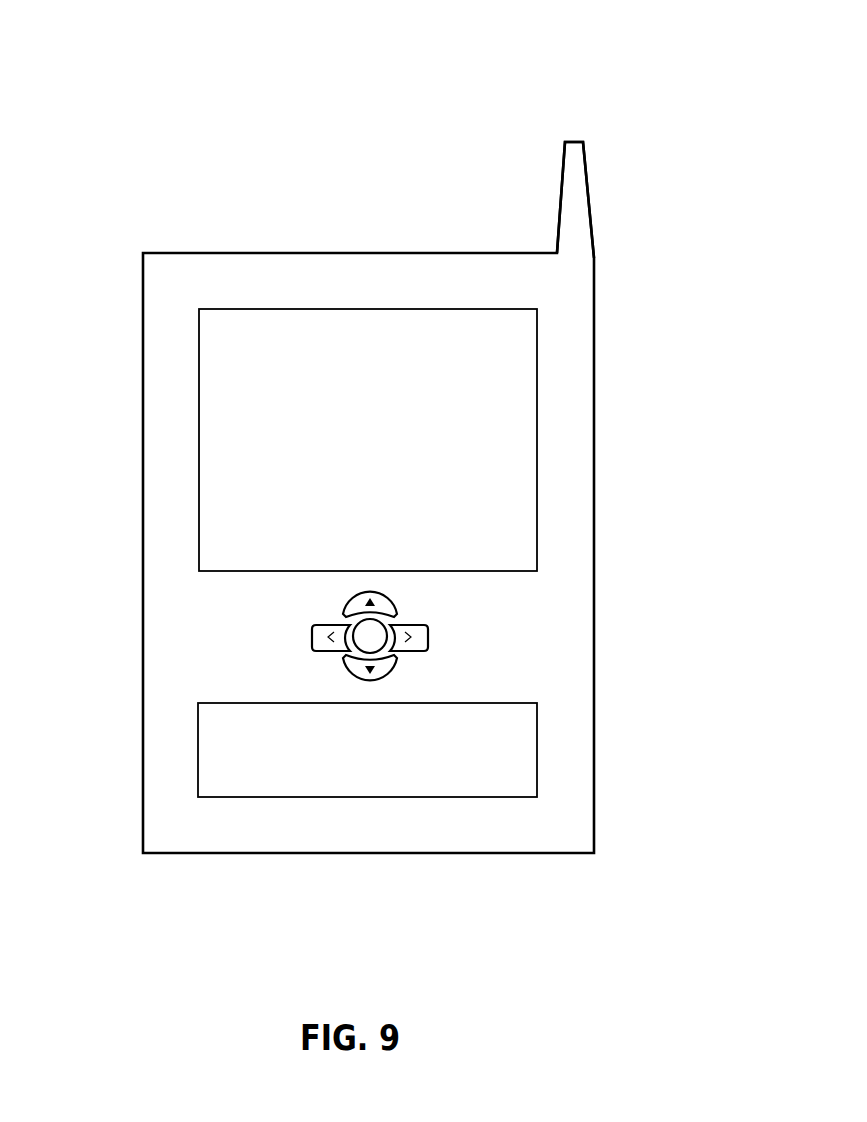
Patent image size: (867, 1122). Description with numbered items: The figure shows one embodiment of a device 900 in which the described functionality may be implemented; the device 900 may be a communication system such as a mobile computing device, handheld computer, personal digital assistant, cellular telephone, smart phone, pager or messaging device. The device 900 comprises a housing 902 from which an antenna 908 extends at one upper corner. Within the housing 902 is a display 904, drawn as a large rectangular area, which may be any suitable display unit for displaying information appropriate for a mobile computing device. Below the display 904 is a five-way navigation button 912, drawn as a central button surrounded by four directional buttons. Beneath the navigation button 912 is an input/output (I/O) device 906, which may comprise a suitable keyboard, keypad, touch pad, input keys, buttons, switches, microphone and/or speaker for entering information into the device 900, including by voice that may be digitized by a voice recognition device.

The device 900 is at (67, 37).
The housing 902 is at (595, 553).
The display 904 is at (538, 328).
The input/output (I/O) device 906 is at (538, 740).
The antenna 908 is at (559, 190).
The five-way navigation button 912 is at (438, 629).